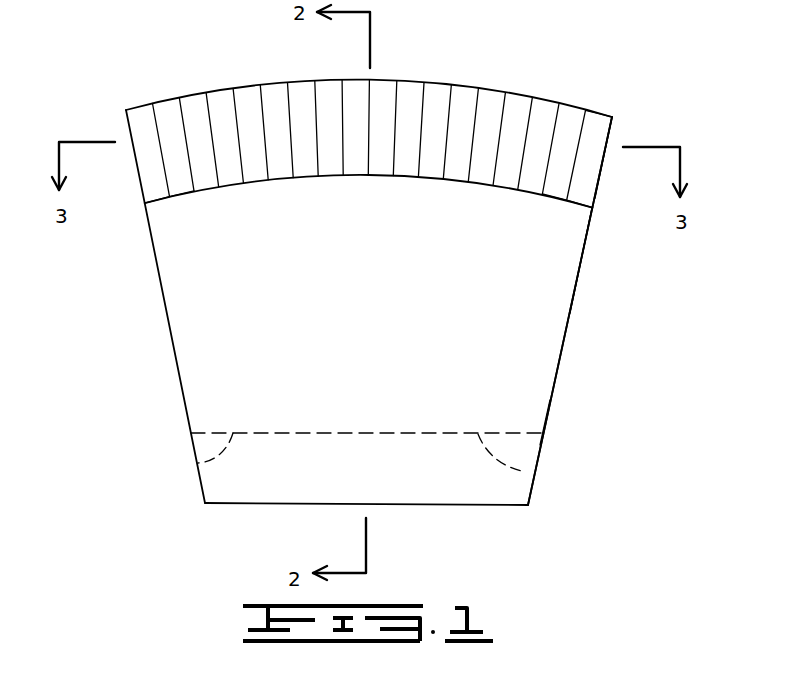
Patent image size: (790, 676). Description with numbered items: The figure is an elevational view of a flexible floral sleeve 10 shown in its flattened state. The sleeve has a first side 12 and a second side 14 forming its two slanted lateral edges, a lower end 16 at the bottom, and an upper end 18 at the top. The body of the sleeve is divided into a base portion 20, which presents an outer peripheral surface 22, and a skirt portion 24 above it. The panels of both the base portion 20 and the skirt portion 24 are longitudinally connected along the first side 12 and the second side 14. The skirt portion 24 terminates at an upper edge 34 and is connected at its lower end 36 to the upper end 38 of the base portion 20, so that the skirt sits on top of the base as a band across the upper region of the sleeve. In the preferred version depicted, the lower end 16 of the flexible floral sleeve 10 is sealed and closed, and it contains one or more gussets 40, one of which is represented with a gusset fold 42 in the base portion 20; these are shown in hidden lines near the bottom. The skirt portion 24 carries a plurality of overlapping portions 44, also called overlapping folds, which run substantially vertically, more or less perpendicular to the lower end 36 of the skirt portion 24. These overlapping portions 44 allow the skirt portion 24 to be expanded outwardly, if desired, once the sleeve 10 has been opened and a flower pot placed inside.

The flexible floral sleeve 10 is at (645, 304).
The first side 12 is at (169, 326).
The second side 14 is at (560, 350).
The lower end 16 is at (427, 505).
The upper end 18 is at (378, 80).
The base portion 20 is at (570, 313).
The outer peripheral surface 22 is at (512, 379).
The skirt portion 24 is at (613, 130).
The upper edge 34 is at (592, 108).
The lower end 36 is at (558, 198).
The upper end 38 is at (143, 203).
The gusset 40 is at (198, 463).
The gusset fold 42 is at (522, 471).
The overlapping portions 44 is at (303, 92).